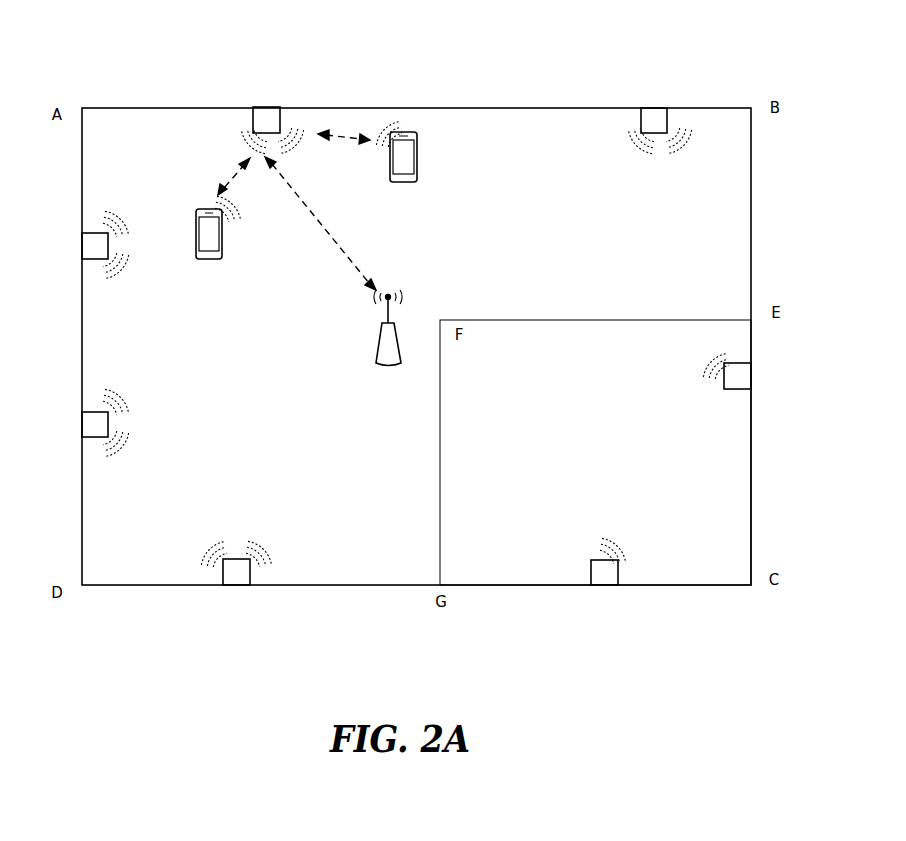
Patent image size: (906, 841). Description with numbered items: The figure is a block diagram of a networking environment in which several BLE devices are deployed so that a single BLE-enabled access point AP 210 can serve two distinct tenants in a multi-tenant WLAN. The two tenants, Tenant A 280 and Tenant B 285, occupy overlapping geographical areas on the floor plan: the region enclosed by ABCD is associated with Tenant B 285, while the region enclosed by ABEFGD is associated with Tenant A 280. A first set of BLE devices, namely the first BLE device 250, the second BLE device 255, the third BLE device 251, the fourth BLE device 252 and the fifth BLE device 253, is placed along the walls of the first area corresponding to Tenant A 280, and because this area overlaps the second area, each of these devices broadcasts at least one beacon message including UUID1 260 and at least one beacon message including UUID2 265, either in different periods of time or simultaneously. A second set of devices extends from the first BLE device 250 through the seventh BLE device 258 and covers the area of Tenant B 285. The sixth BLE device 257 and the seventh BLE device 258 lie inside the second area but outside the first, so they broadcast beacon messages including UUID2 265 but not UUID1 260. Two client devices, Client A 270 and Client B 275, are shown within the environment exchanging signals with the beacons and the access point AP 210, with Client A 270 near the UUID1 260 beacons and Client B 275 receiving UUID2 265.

The BLE-enabled access point 210 is at (335, 371).
The BLE Device 1 250 is at (233, 101).
The BLE Device 3 251 is at (47, 278).
The BLE Device 4 252 is at (47, 456).
The BLE Device 5 253 is at (220, 653).
The BLE Device 2 255 is at (637, 100).
The BLE Device 6 257 is at (775, 405).
The BLE Device 7 258 is at (592, 646).
The UUID1 260 is at (195, 161).
The UUID2 265 is at (317, 130).
The Client A 270 is at (195, 305).
The Client B 275 is at (402, 223).
The Tenant A 280 is at (352, 491).
The Tenant B 285 is at (492, 491).